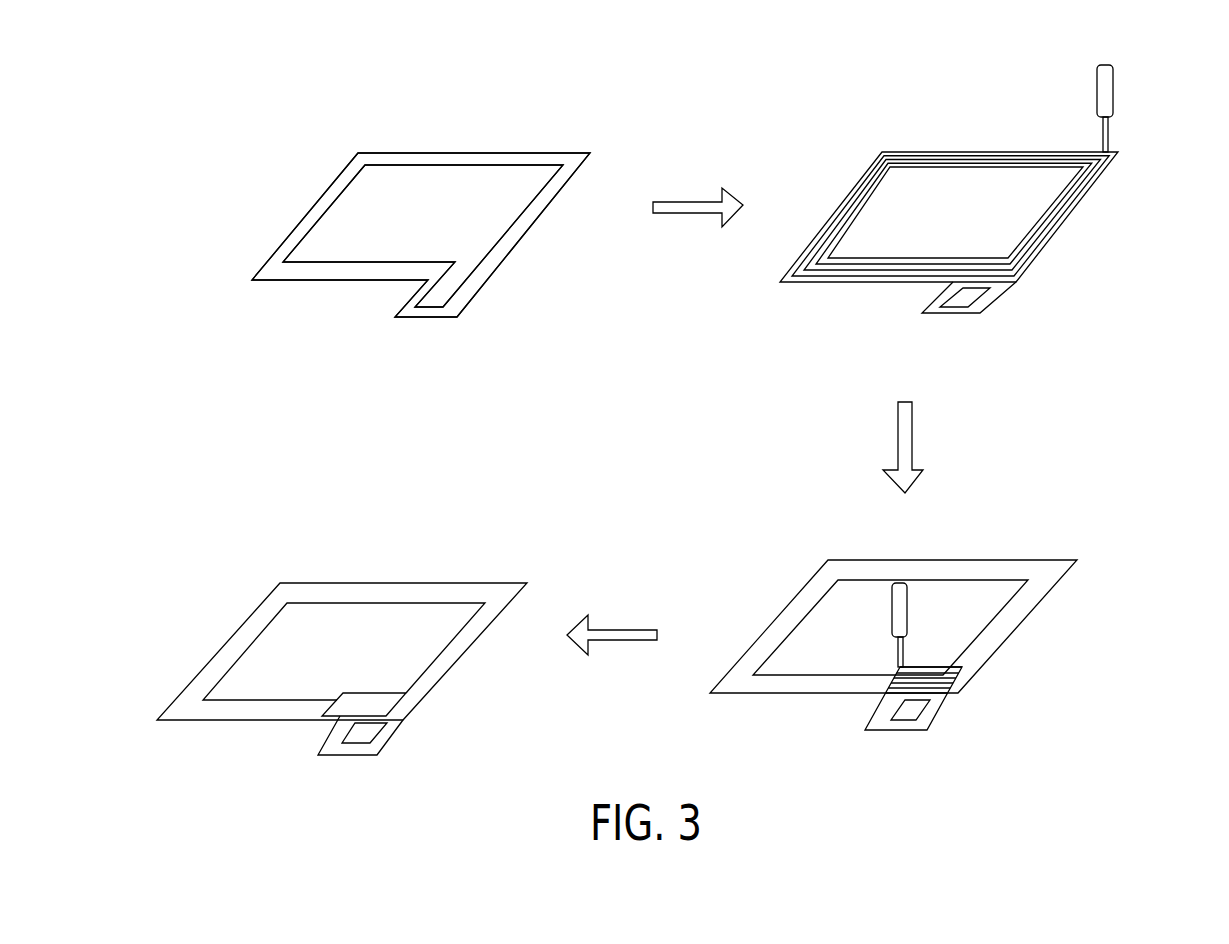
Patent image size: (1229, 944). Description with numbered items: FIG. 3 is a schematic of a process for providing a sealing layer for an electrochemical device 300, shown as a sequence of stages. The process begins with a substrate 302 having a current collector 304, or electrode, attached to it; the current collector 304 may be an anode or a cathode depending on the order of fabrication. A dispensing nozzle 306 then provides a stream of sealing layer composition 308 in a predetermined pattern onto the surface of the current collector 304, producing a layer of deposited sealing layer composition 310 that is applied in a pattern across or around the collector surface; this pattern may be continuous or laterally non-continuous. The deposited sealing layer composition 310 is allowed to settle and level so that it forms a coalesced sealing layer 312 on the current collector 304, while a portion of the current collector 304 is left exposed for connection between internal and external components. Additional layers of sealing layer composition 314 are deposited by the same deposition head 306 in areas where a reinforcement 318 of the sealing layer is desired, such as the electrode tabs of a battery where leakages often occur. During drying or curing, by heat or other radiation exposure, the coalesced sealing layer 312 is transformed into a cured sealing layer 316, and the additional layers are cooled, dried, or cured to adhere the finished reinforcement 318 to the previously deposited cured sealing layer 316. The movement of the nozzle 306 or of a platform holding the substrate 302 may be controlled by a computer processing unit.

The process for providing a sealing layer for an electrochemical device 300 is at (273, 143).
The substrate 302 is at (268, 272).
The current collector 304 is at (330, 225).
The dispensing nozzle 306 is at (1107, 87).
The sealing layer composition 308 is at (1107, 140).
The layer of deposited sealing layer composition 310 is at (1082, 197).
The coalesced sealing layer 312 is at (1043, 568).
The additional layers of sealing layer composition 314 is at (973, 680).
The cured sealing layer 316 is at (498, 592).
The reinforcement of a sealing layer 318 is at (420, 703).